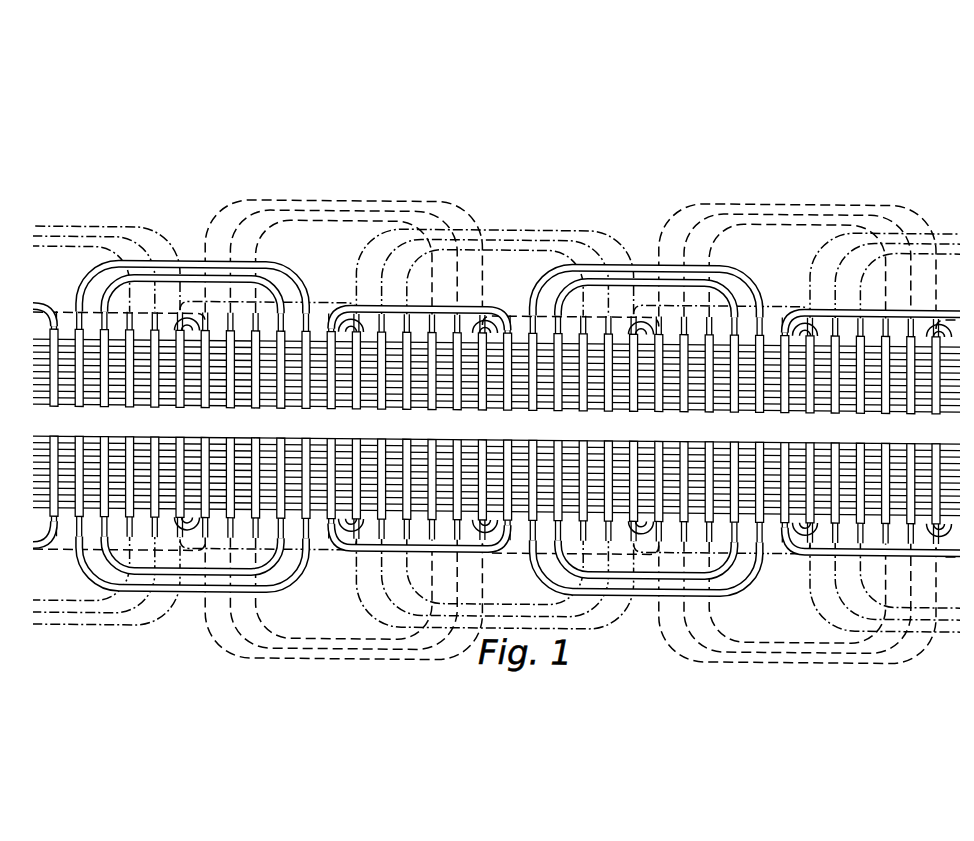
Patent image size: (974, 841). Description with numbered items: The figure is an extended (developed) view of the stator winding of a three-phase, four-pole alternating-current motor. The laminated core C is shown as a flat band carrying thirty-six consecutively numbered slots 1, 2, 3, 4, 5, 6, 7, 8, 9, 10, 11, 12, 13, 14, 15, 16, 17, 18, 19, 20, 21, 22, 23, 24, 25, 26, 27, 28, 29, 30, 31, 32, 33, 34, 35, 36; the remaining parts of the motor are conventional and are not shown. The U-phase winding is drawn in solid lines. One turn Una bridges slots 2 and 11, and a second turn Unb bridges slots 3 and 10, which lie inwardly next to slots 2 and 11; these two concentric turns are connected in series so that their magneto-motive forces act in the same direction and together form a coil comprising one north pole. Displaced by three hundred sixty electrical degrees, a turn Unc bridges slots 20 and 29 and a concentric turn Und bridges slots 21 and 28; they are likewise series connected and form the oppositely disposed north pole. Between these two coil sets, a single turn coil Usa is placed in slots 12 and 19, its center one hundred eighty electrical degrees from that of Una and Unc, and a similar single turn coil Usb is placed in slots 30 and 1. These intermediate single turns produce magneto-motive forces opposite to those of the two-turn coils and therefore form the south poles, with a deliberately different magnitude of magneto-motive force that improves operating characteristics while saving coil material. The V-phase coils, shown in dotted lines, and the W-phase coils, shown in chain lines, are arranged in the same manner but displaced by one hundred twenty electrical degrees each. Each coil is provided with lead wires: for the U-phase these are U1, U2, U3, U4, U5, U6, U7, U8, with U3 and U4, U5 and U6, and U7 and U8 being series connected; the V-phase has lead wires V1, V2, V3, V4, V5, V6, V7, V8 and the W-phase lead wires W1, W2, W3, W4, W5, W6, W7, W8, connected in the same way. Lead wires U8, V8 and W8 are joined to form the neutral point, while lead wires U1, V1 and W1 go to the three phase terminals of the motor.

The laminated core C is at (39, 469).
The slot 1 is at (55, 423).
The slot 2 is at (79, 423).
The slot 3 is at (104, 424).
The slot 4 is at (129, 424).
The slot 5 is at (154, 424).
The slot 6 is at (180, 424).
The slot 7 is at (205, 424).
The slot 8 is at (230, 425).
The slot 9 is at (255, 425).
The slot 10 is at (280, 425).
The slot 11 is at (306, 425).
The slot 12 is at (331, 426).
The slot 13 is at (356, 426).
The slot 14 is at (381, 426).
The slot 15 is at (406, 426).
The slot 16 is at (432, 426).
The slot 17 is at (458, 427).
The slot 18 is at (482, 427).
The slot 19 is at (507, 427).
The slot 20 is at (532, 427).
The slot 21 is at (558, 428).
The slot 22 is at (583, 428).
The slot 23 is at (608, 428).
The slot 24 is at (633, 428).
The slot 25 is at (658, 428).
The slot 26 is at (684, 429).
The slot 27 is at (710, 429).
The slot 28 is at (734, 429).
The slot 29 is at (759, 429).
The slot 30 is at (784, 429).
The slot 31 is at (810, 430).
The slot 32 is at (835, 430).
The slot 33 is at (860, 430).
The slot 34 is at (885, 430).
The slot 35 is at (910, 431).
The slot 36 is at (936, 431).
The lead wire U1 is at (82, 330).
The lead wire U2 is at (281, 330).
The lead wire U3 is at (505, 330).
The lead wire U4 is at (332, 330).
The lead wire U5 is at (532, 330).
The lead wire U6 is at (738, 330).
The lead wire U7 is at (54, 330).
The lead wire U8 is at (789, 330).
The lead wire V1 is at (233, 330).
The lead wire V2 is at (428, 330).
The lead wire V3 is at (658, 330).
The lead wire V4 is at (482, 330).
The lead wire V5 is at (687, 330).
The lead wire V6 is at (892, 330).
The lead wire V7 is at (205, 330).
The lead wire V8 is at (942, 330).
The lead wire W1 is at (383, 295).
The lead wire W2 is at (583, 295).
The lead wire W3 is at (810, 295).
The lead wire W4 is at (635, 295).
The lead wire W5 is at (840, 295).
The lead wire W6 is at (129, 295).
The lead wire W7 is at (355, 295).
The lead wire W8 is at (181, 295).
The turn Una is at (205, 604).
The turn Unb is at (207, 576).
The turn Unc is at (655, 604).
The turn Und is at (658, 578).
The single turn coil Usa is at (358, 569).
The single turn coil Usb is at (824, 565).